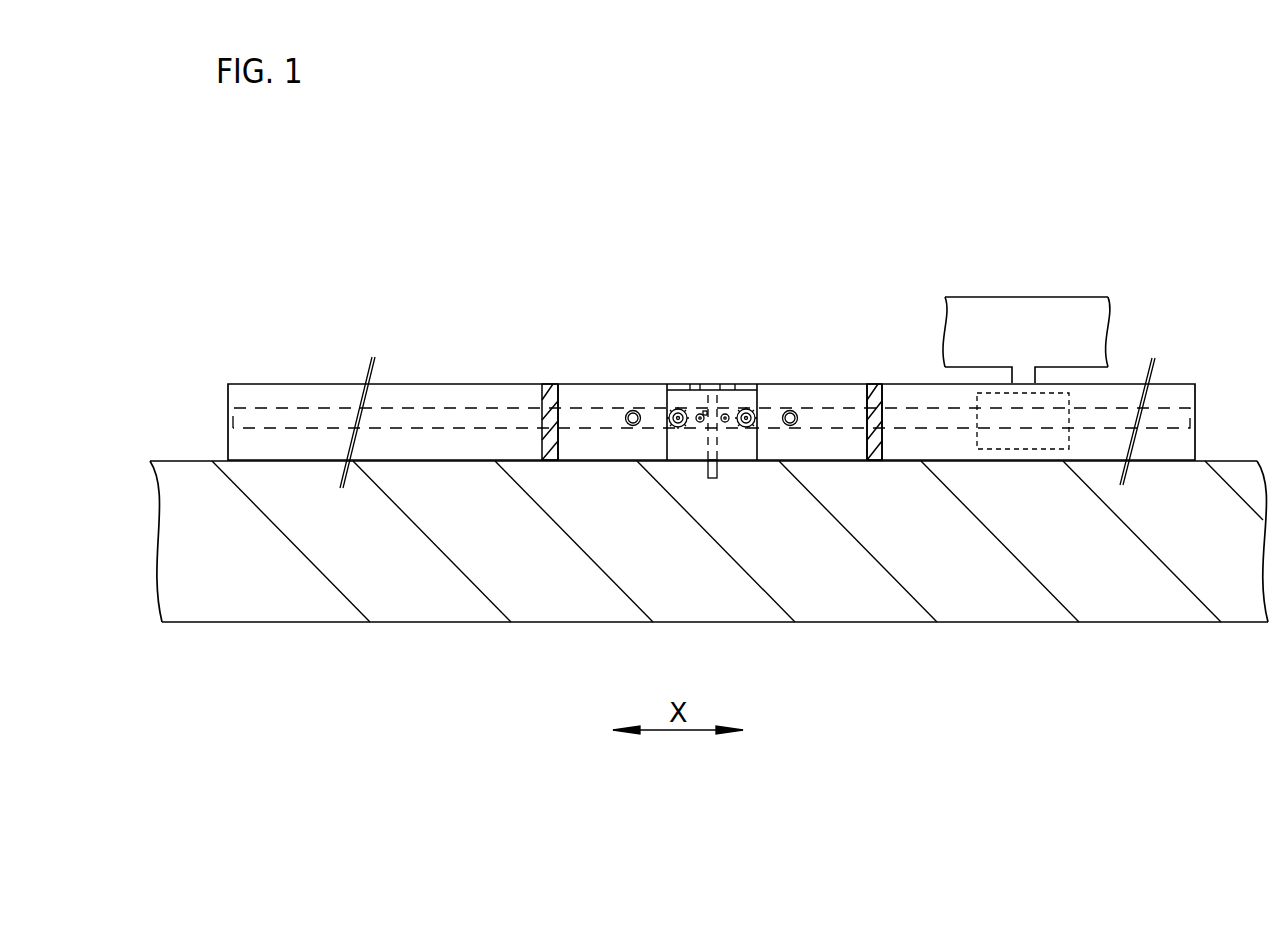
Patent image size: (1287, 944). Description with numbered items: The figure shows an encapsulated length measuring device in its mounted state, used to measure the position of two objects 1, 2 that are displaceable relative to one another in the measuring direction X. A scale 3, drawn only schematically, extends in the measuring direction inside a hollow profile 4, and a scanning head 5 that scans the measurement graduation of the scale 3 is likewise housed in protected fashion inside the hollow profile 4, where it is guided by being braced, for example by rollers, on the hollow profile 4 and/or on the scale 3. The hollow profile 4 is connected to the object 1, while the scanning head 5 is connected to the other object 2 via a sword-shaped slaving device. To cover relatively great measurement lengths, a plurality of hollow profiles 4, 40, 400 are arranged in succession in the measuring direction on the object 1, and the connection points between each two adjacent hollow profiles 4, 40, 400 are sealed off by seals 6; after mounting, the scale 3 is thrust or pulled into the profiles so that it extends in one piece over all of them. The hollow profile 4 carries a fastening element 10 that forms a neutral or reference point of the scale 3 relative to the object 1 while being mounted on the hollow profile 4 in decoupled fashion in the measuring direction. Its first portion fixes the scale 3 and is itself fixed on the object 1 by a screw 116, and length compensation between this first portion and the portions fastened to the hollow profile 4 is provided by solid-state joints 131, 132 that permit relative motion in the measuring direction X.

The object 1 is at (1236, 474).
The object 2 is at (980, 318).
The scale 3 is at (398, 410).
The hollow profile 4 is at (590, 395).
The scanning head 5 is at (1050, 395).
The seal 6 is at (550, 395).
The fastening element 10 is at (690, 400).
The hollow profile 40 is at (283, 398).
The screw 116 is at (715, 398).
The solid-state joint 131 is at (672, 430).
The solid-state joint 132 is at (741, 430).
The hollow profile 400 is at (1178, 393).